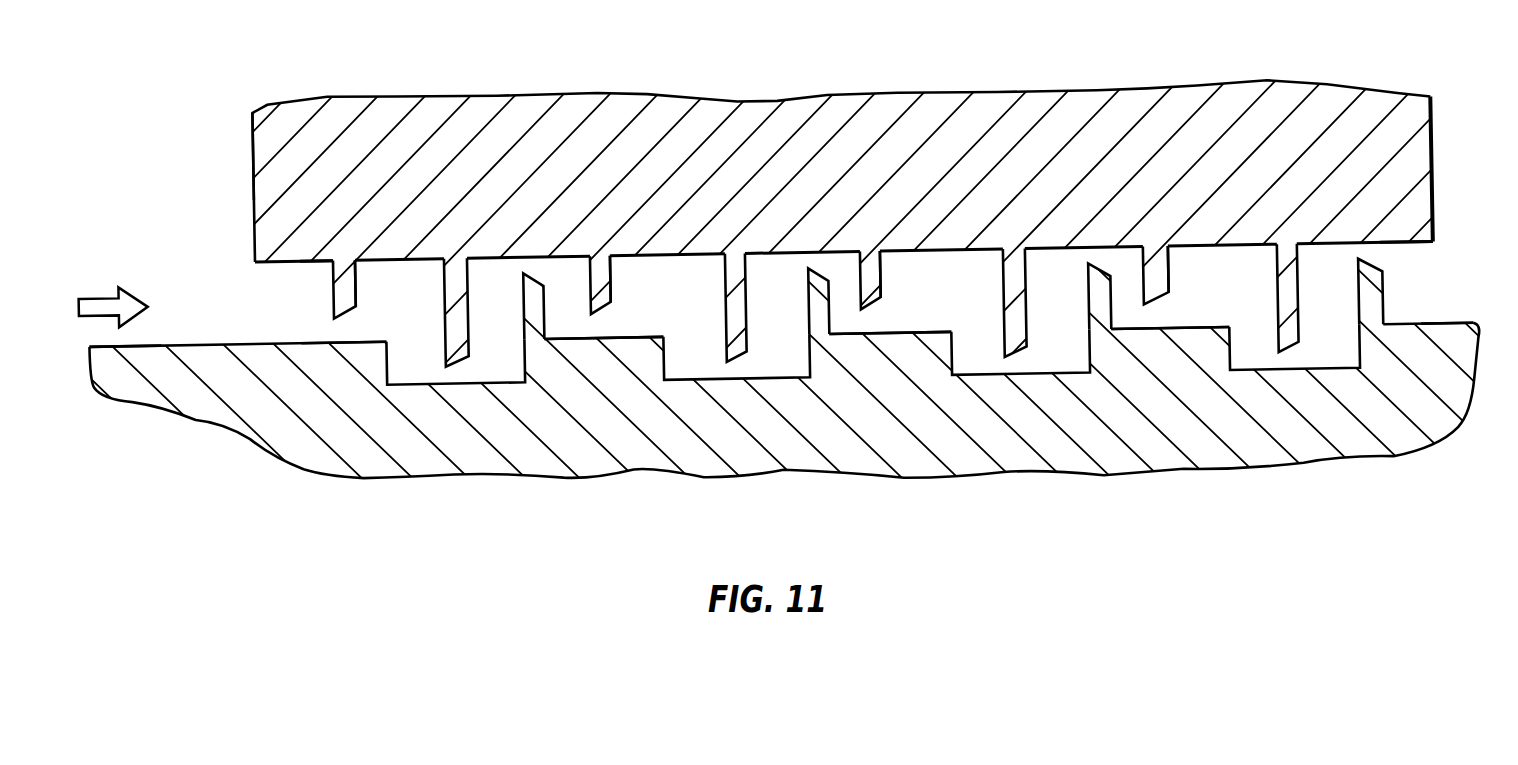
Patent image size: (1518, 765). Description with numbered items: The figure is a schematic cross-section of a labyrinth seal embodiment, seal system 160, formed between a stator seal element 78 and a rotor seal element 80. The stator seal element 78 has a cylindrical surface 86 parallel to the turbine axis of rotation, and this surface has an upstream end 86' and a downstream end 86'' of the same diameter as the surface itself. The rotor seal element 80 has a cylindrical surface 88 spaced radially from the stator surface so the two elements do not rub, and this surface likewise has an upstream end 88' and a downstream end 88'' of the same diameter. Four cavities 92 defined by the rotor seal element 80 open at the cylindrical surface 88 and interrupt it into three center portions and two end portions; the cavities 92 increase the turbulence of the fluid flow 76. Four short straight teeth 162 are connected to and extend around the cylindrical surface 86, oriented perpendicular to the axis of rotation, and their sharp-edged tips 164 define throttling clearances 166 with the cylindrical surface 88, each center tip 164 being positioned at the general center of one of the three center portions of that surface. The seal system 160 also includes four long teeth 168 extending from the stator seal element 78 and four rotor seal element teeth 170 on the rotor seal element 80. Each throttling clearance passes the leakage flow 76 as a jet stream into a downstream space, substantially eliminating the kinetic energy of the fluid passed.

The seal system 160 is at (190, 109).
The stator seal element 78 is at (262, 195).
The rotor seal element 80 is at (188, 392).
The fluid flow 76 is at (124, 286).
The cylindrical surface 86 is at (819, 266).
The upstream end 86' is at (332, 226).
The downstream end 86'' is at (1432, 232).
The cylindrical surface 88 is at (781, 316).
The upstream end 88' is at (137, 308).
The downstream end 88'' is at (1454, 306).
The cavities 92 is at (396, 370).
The short straight teeth 162 is at (355, 282).
The sharp-edged tips 164 is at (333, 320).
The throttling clearances 166 is at (338, 328).
The long teeth 168 is at (446, 327).
The rotor seal element teeth 170 is at (523, 340).